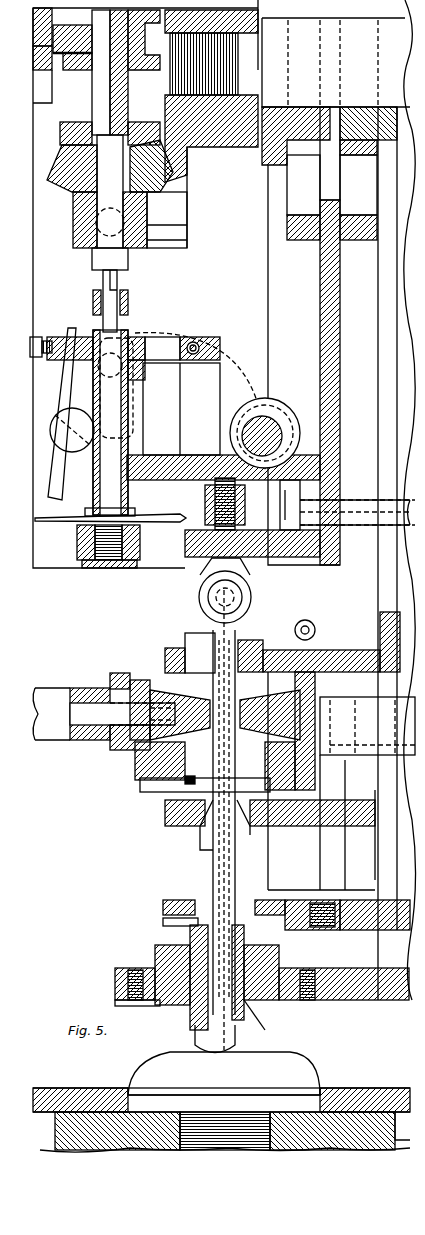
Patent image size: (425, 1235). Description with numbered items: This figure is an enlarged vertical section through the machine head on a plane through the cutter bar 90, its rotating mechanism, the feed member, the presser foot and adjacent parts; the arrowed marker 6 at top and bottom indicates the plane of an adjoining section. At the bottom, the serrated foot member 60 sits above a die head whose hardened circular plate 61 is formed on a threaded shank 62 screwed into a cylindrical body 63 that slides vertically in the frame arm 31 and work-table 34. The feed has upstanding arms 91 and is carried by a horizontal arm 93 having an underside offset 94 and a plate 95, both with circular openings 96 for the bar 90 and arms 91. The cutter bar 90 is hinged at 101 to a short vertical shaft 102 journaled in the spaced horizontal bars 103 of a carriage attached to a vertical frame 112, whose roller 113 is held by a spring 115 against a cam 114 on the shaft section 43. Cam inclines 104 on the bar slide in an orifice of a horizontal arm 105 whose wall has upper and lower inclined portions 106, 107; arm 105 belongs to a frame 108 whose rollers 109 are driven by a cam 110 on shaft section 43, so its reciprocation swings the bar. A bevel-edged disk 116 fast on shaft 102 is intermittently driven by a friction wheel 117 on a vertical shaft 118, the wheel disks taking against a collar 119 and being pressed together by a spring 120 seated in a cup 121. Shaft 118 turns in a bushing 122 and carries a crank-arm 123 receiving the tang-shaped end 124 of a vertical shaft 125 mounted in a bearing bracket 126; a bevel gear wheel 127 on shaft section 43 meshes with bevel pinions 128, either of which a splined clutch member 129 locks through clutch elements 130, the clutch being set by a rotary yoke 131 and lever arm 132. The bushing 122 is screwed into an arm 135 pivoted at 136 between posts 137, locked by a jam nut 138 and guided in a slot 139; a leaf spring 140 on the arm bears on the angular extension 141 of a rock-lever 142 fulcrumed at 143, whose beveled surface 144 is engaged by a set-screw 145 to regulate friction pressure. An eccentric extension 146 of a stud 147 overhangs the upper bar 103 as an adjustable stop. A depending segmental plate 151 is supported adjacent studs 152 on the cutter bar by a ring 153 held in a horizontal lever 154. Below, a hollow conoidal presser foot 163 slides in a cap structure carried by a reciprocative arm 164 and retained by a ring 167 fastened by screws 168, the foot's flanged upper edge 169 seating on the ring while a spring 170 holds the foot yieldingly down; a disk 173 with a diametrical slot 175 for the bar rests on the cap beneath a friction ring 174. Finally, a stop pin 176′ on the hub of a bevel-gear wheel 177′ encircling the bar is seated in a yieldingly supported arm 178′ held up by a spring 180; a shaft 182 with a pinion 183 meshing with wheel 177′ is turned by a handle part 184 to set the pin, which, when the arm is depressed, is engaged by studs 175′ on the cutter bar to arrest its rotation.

The section line 6 is at (285, 50).
The arm 31 is at (355, 1150).
The work-table 34 is at (395, 1088).
The shaft section 43 is at (336, 62).
The serrated foot member 60 is at (135, 1080).
The circular plate 61 is at (300, 1080).
The screw-threaded shank 62 is at (250, 1150).
The cylindrical body 63 is at (130, 1150).
The cutter bar 90 is at (235, 880).
The upstanding arms 91 is at (190, 930).
The horizontal arm 93 is at (395, 930).
The offset 94 is at (300, 925).
The plate 95 is at (165, 925).
The circular openings 96 is at (195, 905).
The hinge connection 101 is at (208, 597).
The short vertical shaft 102 is at (225, 570).
The carriage bars 103 is at (150, 455).
The cam inclines 104 is at (200, 840).
The horizontal arm 105 is at (165, 812).
The upper inclined portion 106 is at (200, 800).
The lower inclined portion 107 is at (250, 826).
The vertical frame 108 is at (390, 295).
The lateral rollers 109 is at (360, 240).
The cam 110 is at (355, 120).
The vertical frame 112 is at (320, 315).
The lateral roller 113 is at (305, 230).
The cam 114 is at (297, 120).
The spring 115 is at (345, 505).
The bevel-edged disk 116 is at (244, 524).
The friction wheel 117 is at (77, 540).
The vertical shaft 118 is at (128, 405).
The collar 119 is at (145, 530).
The spring 120 is at (120, 560).
The cup 121 is at (82, 564).
The bushing 122 is at (128, 305).
The crank-arm 123 is at (93, 300).
The tang-shaped lower end 124 is at (117, 280).
The vertical shaft 125 is at (187, 240).
The bearing bracket 126 is at (187, 222).
The bevel gear wheel 127 is at (180, 160).
The bevel pinions 128 is at (150, 192).
The clutch member 129 is at (140, 70).
The clutch elements 130 is at (160, 95).
The rotary yoke 131 is at (62, 64).
The lever arm 132 is at (66, 70).
The arm 135 is at (165, 368).
The pivot 136 is at (220, 345).
The posts 137 is at (220, 410).
The jam nut 138 is at (145, 365).
The guide slot 139 is at (120, 516).
The leaf spring 140 is at (70, 340).
The angular extension 141 is at (50, 521).
The rock-lever 142 is at (62, 410).
The fulcrum 143 is at (115, 440).
The beveled surface 144 is at (128, 335).
The set-screw 145 is at (200, 390).
The eccentric extension 146 is at (270, 420).
The stud 147 is at (285, 438).
The segmental plate 151 is at (285, 640).
The studs 152 is at (180, 735).
The ring 153 is at (175, 648).
The horizontal lever 154 is at (355, 650).
The conoidal foot 163 is at (190, 1020).
The vertically-reciprocative arm 164 is at (380, 990).
The ring 167 is at (120, 985).
The screws 168 is at (128, 975).
The flanged upper edge 169 is at (268, 1021).
The spring 170 is at (360, 958).
The disk 173 is at (279, 960).
The friction ring 174 is at (190, 940).
The diametrical slot 175 is at (155, 960).
The studs 175′ is at (200, 790).
The stop pin 176′ is at (185, 780).
The bevel-gear wheel 177′ is at (135, 760).
The yieldingly-supported arm 178′ is at (367, 726).
The spring 180 is at (315, 680).
The shaft 182 is at (78, 703).
The pinion 183 is at (150, 700).
The handle part 184 is at (45, 688).